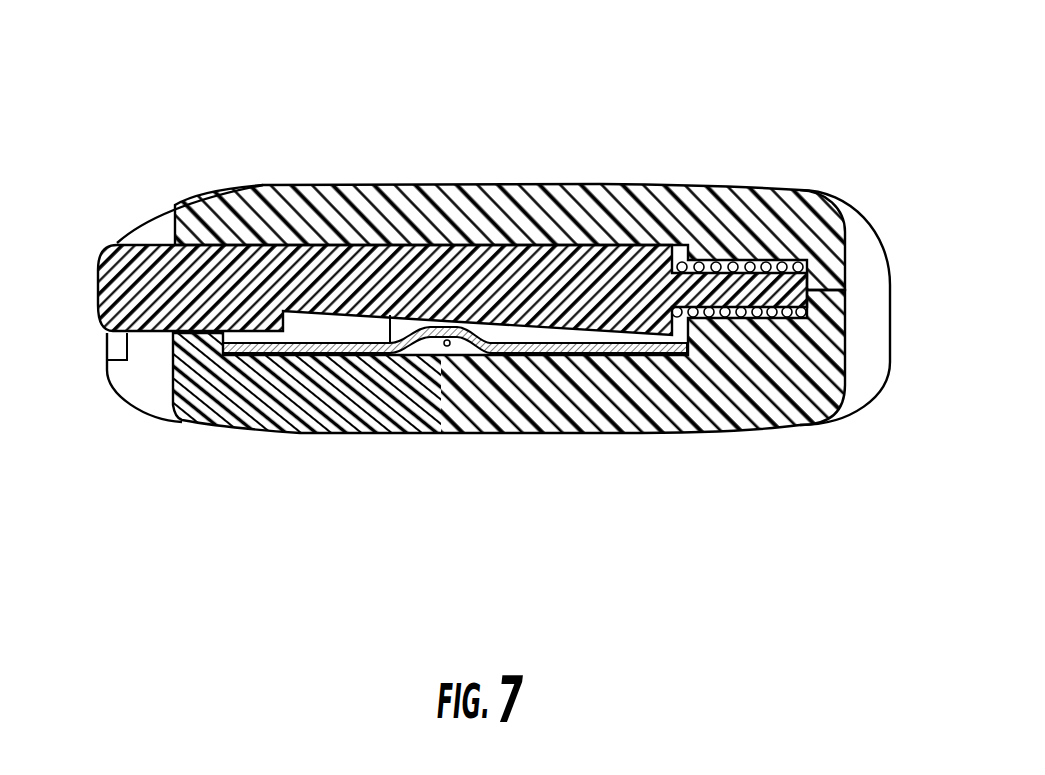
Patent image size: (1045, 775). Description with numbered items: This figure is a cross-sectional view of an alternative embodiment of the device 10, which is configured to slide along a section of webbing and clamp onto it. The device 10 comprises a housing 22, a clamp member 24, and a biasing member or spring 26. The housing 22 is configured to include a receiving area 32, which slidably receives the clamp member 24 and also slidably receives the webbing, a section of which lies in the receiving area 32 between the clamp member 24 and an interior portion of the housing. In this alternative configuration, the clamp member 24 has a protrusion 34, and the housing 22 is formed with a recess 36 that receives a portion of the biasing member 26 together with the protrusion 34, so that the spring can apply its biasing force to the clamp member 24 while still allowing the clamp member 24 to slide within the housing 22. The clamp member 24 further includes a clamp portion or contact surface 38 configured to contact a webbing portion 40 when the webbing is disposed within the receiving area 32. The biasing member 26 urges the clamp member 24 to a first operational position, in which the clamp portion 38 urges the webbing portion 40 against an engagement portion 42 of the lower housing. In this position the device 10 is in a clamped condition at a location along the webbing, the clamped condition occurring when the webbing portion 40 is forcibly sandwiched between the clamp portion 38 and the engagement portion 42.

The device 10 is at (628, 88).
The housing 22 is at (275, 185).
The clamp member 24 is at (100, 260).
The biasing member or spring 26 is at (748, 320).
The receiving area 32 is at (315, 332).
The protrusion 34 is at (767, 297).
The recess 36 is at (742, 258).
The clamp portion or contact surface 38 is at (442, 325).
The webbing portion 40 is at (523, 353).
The engagement portion 42 is at (440, 352).